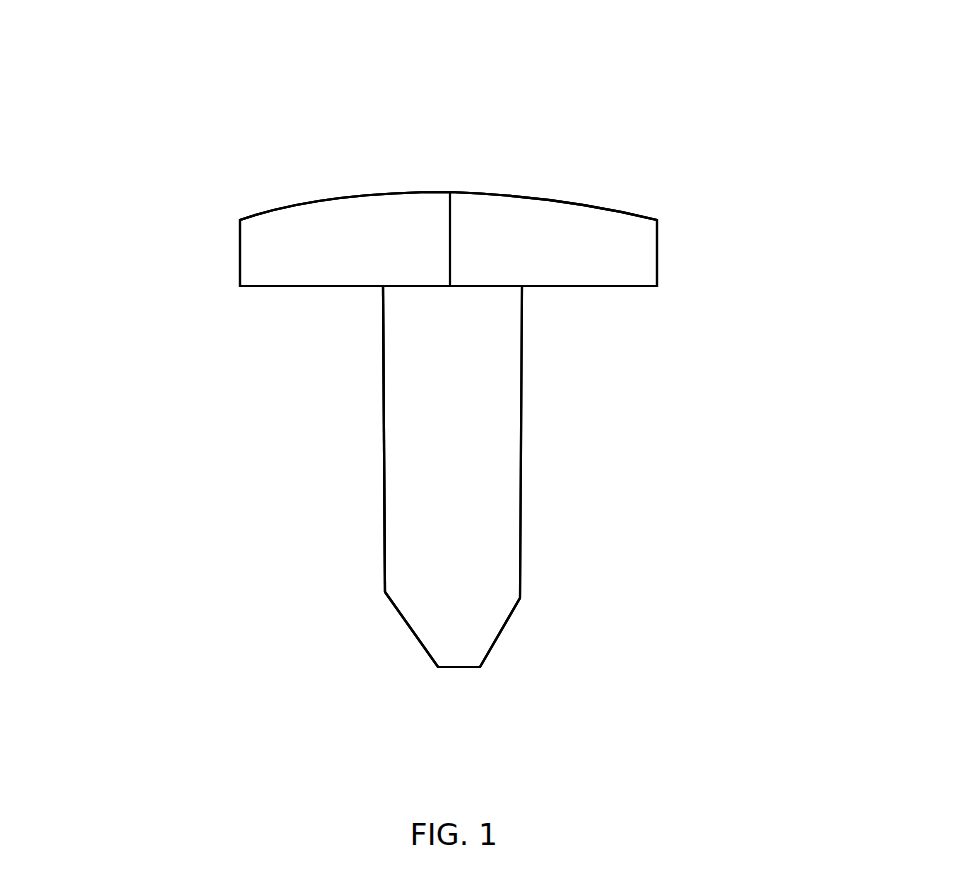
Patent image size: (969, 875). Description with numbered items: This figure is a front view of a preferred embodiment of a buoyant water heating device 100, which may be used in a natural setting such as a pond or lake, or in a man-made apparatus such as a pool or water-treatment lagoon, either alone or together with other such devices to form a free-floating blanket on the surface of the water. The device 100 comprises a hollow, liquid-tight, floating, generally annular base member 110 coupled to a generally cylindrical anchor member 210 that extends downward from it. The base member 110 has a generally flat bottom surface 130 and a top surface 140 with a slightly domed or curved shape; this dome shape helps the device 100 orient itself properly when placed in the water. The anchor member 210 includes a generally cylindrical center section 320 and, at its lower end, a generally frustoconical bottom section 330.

The buoyant water heating device 100 is at (477, 118).
The base member 110 is at (608, 188).
The bottom surface 130 is at (287, 287).
The top surface 140 is at (338, 197).
The anchor member 210 is at (537, 450).
The center section 320 is at (382, 440).
The bottom section 330 is at (407, 623).